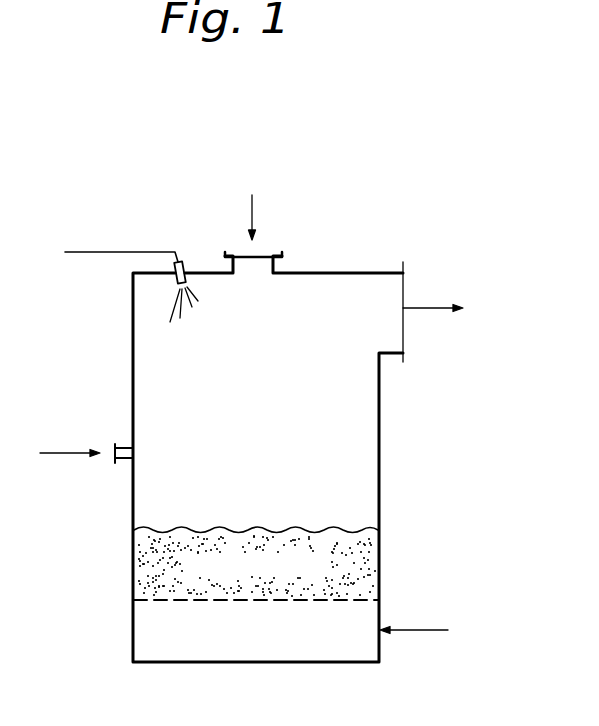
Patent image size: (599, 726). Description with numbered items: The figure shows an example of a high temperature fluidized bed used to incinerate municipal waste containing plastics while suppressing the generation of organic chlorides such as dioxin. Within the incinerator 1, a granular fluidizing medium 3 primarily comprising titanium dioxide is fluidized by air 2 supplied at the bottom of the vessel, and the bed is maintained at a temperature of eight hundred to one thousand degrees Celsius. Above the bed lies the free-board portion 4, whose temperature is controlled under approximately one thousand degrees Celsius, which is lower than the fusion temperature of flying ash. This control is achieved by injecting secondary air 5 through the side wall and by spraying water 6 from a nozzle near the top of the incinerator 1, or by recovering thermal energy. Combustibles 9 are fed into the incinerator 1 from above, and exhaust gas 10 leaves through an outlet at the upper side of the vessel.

The incinerator 1 is at (381, 440).
The air 2 is at (421, 630).
The fluidizing medium 3 is at (141, 572).
The free-board portion 4 is at (141, 384).
The secondary air 5 is at (68, 454).
The water 6 is at (133, 252).
The combustibles 9 is at (254, 210).
The exhaust gas 10 is at (437, 312).